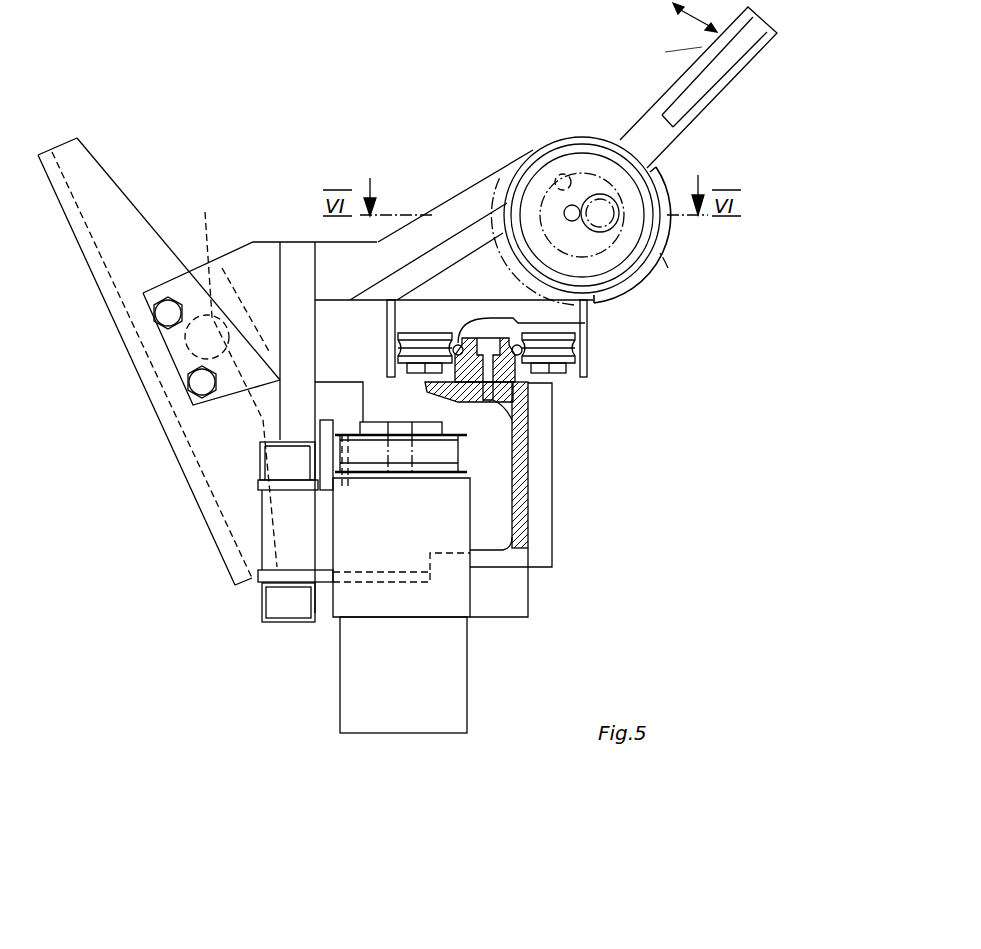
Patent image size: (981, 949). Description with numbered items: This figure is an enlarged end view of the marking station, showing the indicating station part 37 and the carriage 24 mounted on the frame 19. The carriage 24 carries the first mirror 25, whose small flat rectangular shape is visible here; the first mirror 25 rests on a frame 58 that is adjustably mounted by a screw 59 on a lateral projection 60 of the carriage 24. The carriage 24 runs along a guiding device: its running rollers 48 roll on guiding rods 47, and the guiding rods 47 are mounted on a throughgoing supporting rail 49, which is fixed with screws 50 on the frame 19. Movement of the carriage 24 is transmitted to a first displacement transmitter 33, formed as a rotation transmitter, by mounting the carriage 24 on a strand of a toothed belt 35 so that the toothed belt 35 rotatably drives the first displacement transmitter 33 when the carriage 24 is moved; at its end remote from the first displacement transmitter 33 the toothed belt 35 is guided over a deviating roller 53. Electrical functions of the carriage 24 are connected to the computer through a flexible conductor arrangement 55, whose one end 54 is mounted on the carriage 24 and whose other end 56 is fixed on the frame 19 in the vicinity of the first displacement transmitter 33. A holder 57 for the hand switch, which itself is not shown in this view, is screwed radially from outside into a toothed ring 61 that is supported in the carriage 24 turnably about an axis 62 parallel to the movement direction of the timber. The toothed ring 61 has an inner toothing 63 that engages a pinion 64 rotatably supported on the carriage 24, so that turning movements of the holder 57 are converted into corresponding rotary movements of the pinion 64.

The frame 19 is at (558, 470).
The carriage 24 is at (438, 198).
The first mirror 25 is at (77, 190).
The first displacement transmitter 33 is at (474, 663).
The toothed belt 35 is at (458, 462).
The indicating station part 37 is at (505, 95).
The guiding rods 47 is at (585, 323).
The running rollers 48 is at (400, 346).
The supporting rail 49 is at (553, 378).
The screws 50 is at (520, 423).
The deviating roller 53 is at (460, 435).
The end of flexible conductor arrangement 54 is at (258, 465).
The flexible conductor arrangement 55 is at (260, 532).
The other end of flexible conductor arrangement 56 is at (262, 607).
The holder 57 is at (745, 68).
The frame 58 is at (137, 195).
The screw 59 is at (173, 298).
The lateral projection 60 is at (253, 242).
The toothed ring 61 is at (566, 177).
The axis 62 is at (572, 213).
The inner toothing 63 is at (570, 178).
The pinion 64 is at (605, 232).